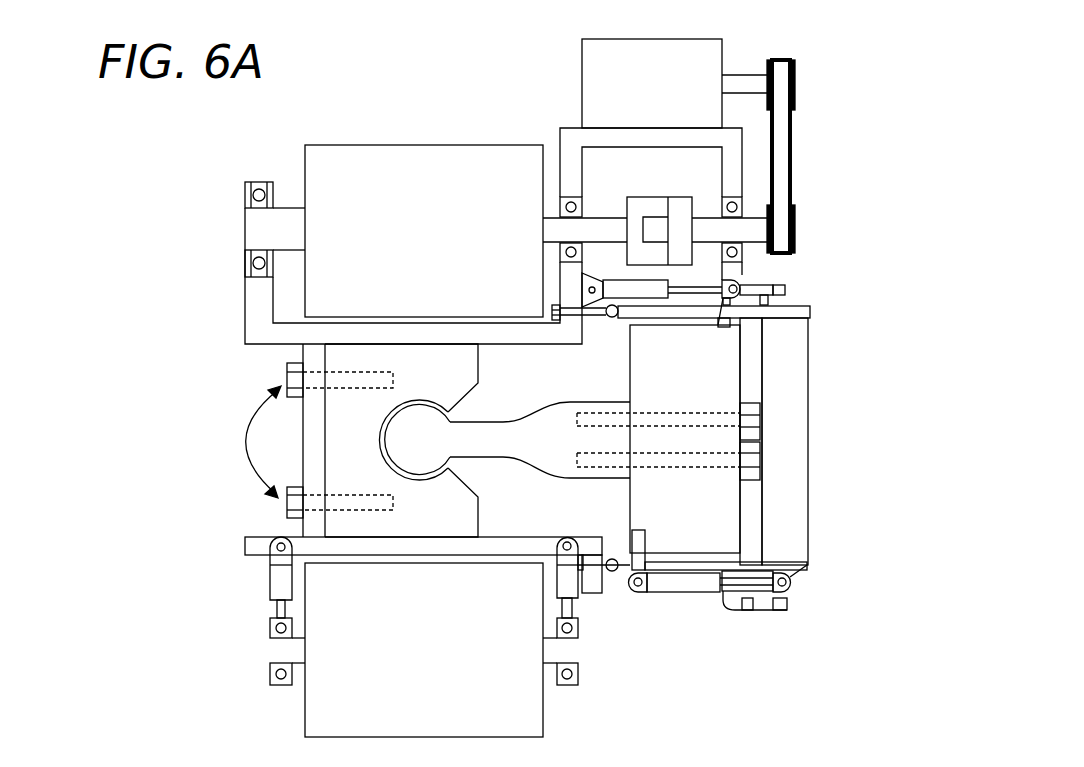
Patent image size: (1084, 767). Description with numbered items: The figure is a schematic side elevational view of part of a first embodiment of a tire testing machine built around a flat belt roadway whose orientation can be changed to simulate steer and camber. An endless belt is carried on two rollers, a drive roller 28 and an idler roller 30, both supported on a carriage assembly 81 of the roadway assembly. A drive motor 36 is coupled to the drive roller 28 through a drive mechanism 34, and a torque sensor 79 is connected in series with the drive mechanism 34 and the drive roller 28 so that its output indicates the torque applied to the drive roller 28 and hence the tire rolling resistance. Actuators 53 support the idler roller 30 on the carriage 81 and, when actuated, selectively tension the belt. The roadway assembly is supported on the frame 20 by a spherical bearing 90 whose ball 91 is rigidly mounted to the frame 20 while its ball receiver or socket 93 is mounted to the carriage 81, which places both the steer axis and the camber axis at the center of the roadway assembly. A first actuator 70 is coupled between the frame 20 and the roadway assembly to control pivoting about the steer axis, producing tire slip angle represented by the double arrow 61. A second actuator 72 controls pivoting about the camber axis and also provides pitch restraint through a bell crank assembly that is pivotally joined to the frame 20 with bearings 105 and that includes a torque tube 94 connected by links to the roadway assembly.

The frame 20 is at (700, 384).
The drive roller 28 is at (305, 160).
The idler roller 30 is at (308, 707).
The drive mechanism 34 is at (814, 146).
The drive motor 36 is at (582, 66).
The actuators 53 is at (270, 578).
The double arrow 61 is at (248, 457).
The first actuator 70 is at (640, 278).
The second actuator 72 is at (715, 592).
The torque sensor 79 is at (658, 197).
The carriage assembly 81 is at (392, 323).
The spherical bearing 90 is at (387, 463).
The ball 91 is at (417, 457).
The ball receiver or socket 93 is at (303, 362).
The torque tube 94 is at (793, 380).
The bearings 105 is at (786, 290).